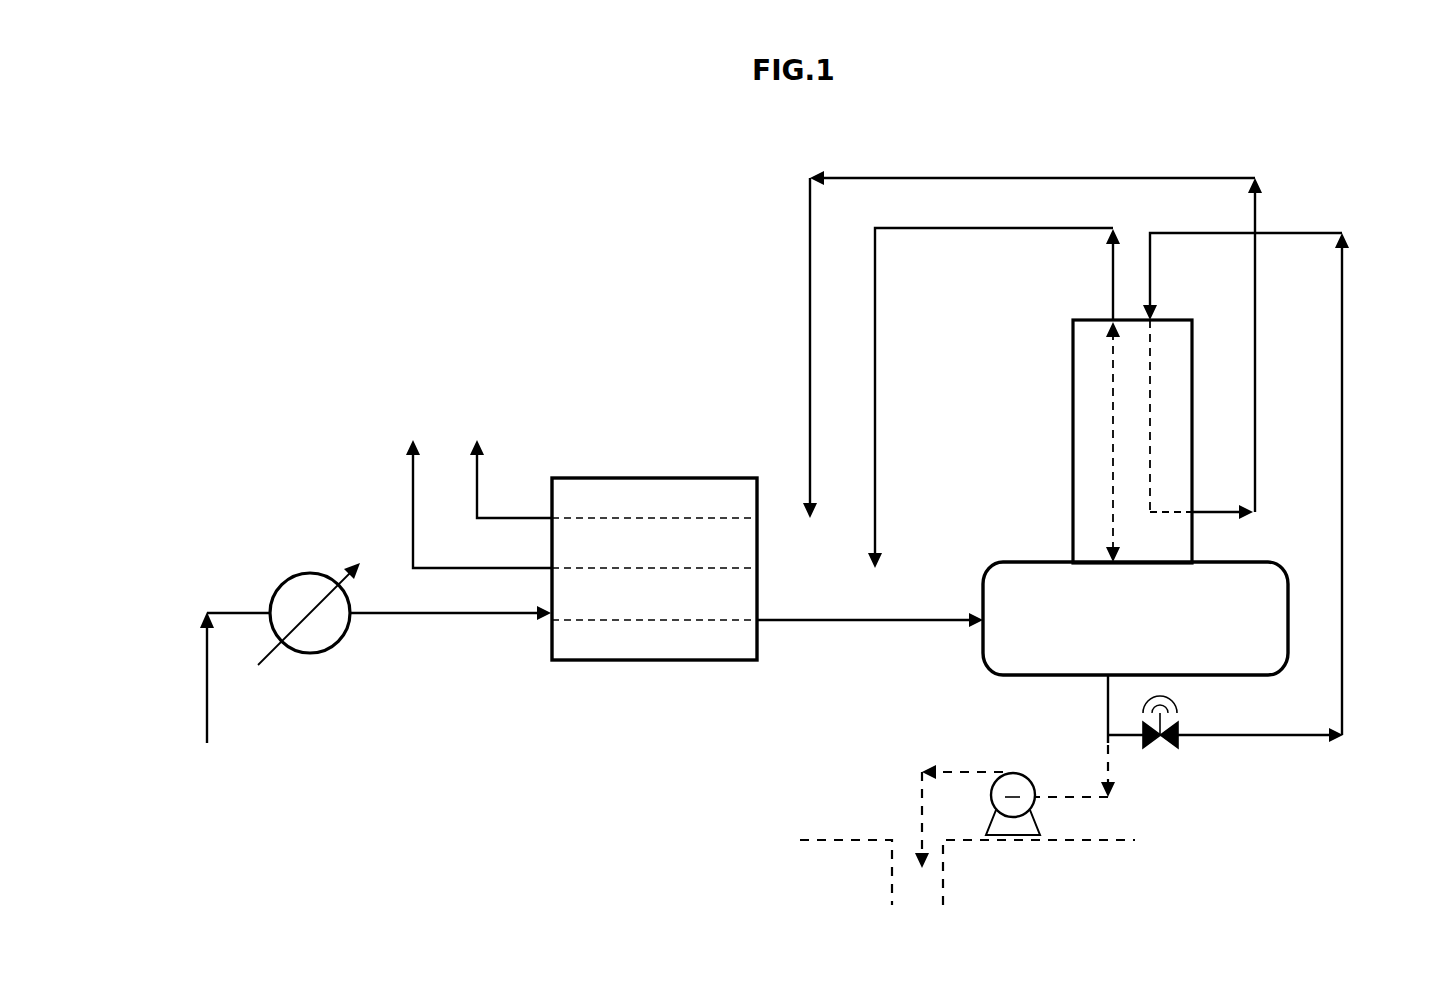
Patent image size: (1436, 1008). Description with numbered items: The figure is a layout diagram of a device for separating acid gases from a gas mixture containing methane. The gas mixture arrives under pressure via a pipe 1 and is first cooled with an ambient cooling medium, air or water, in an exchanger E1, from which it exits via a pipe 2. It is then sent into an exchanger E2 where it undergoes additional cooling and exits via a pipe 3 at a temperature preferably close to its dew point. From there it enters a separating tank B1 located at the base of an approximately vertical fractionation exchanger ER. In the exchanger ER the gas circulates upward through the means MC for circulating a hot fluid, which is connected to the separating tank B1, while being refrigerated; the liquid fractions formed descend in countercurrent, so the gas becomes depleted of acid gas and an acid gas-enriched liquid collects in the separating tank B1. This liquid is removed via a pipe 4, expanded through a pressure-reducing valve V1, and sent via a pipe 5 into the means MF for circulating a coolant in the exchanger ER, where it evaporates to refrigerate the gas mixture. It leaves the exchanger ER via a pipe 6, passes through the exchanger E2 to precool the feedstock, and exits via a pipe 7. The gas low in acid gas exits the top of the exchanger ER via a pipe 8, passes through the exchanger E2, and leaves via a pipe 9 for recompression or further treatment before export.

The pipe 1 is at (207, 690).
The pipe 2 is at (468, 614).
The pipe 3 is at (858, 621).
The pipe 4 is at (1108, 717).
The pipe 5 is at (1342, 390).
The pipe 6 is at (810, 338).
The pipe 7 is at (477, 485).
The pipe 8 is at (875, 318).
The pipe 9 is at (413, 491).
The exchanger E1 is at (309, 628).
The exchanger E2 is at (654, 591).
The separating tank B1 is at (1135, 618).
The pressure-reducing valve V1 is at (1160, 739).
The fractionation exchanger ER is at (1064, 344).
The means for circulating a hot fluid MC is at (1100, 402).
The means for circulating a coolant MF is at (1161, 367).